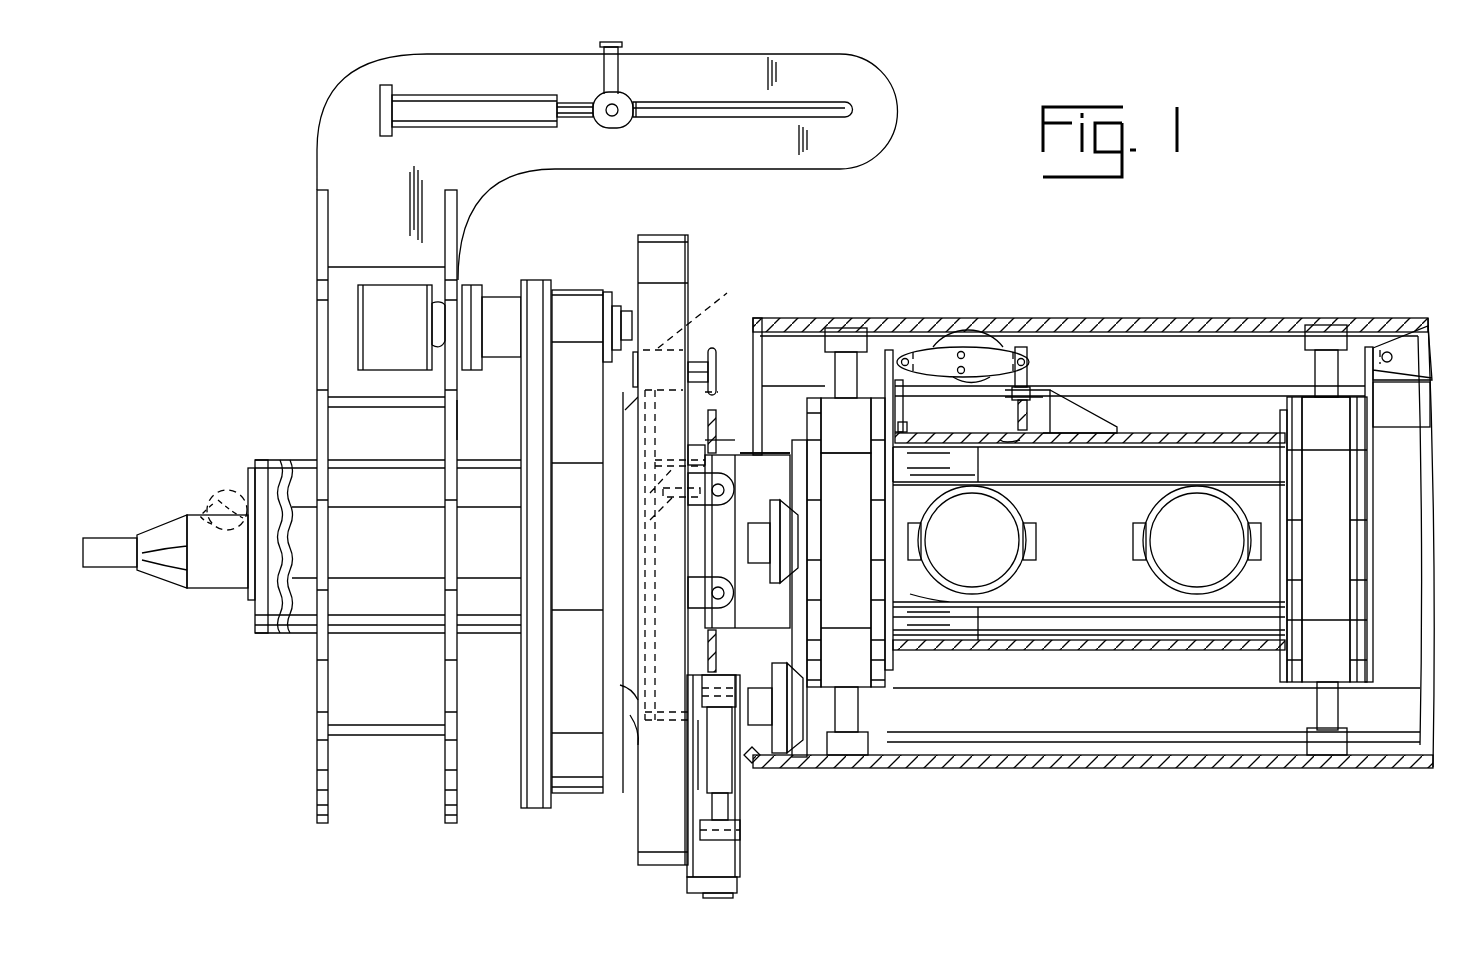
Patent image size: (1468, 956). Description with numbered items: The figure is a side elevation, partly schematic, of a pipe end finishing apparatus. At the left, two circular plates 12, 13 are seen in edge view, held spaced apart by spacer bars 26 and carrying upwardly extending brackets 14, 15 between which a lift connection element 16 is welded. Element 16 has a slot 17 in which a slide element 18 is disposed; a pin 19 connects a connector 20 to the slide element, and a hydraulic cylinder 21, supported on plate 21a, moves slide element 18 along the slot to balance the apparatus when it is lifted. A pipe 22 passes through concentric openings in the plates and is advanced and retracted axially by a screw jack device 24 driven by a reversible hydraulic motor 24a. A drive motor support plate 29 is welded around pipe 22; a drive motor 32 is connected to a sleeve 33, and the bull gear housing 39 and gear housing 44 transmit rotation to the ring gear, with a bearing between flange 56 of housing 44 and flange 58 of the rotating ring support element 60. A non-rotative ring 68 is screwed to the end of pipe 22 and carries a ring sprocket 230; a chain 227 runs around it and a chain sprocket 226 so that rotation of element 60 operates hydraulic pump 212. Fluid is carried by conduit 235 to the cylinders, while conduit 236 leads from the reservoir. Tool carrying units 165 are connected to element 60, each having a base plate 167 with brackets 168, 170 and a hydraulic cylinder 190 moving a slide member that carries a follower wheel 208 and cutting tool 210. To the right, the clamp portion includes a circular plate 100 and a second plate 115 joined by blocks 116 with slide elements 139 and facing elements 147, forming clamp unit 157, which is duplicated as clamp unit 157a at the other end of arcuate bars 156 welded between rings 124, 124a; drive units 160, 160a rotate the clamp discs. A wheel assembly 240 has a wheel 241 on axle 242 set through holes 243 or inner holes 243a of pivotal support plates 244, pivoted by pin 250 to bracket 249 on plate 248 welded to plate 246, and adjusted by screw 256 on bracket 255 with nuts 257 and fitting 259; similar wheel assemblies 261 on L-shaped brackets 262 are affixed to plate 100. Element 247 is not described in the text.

The circular plate 12 is at (392, 494).
The circular plate 13 is at (458, 417).
The brackets 14 is at (317, 220).
The brackets 15 is at (458, 208).
The lift connection element 16 is at (850, 168).
The slot 17 is at (745, 115).
The slide element 18 is at (635, 103).
The pin 19 is at (612, 118).
The connector 20 is at (620, 45).
The hydraulic cylinder 21 is at (490, 127).
The plate 21a is at (380, 95).
The pipe 22 is at (294, 460).
The screw jack device 24 is at (207, 592).
The reversible hydraulic motor 24a is at (208, 490).
The spacer bars 26 is at (413, 408).
The drive motor support plate 29 is at (538, 280).
The drive motor 32 is at (358, 322).
The sleeve 33 is at (440, 360).
The bull gear housing 39 is at (485, 287).
The gear housing 44 is at (580, 290).
The flange 56 is at (625, 690).
The flange 58 is at (632, 725).
The rotating ring support element 60 is at (655, 235).
The ring 68 is at (717, 420).
The circular plate 100 is at (1368, 656).
The second circular plate 115 is at (878, 690).
The blocks 116 is at (803, 398).
The ring 124 is at (982, 650).
The ring 124a is at (1282, 422).
The slide element 139 is at (848, 328).
The facing elements 147 is at (892, 350).
The bars 156 is at (1155, 433).
The left hand clamp unit 157 is at (793, 335).
The clamp unit 157a is at (1298, 392).
The drive unit 160 is at (1024, 512).
The drive unit 160a is at (1142, 552).
The tool carrying unit 165 is at (745, 585).
The base plate 167 is at (690, 643).
The bracket 168 is at (715, 577).
The bracket 170 is at (735, 482).
The hydraulic cylinder 190 is at (707, 778).
The follower wheel 208 is at (810, 527).
The cutting tool 210 is at (752, 765).
The hydraulic pump 212 is at (706, 315).
The chain sprocket 226 is at (714, 358).
The chain 227 is at (728, 391).
The ring sprocket 230 is at (716, 440).
The conduit 235 is at (660, 492).
The conduit 236 is at (648, 520).
The wheel assembly 240 is at (1047, 362).
The wheel 241 is at (1020, 350).
The axle 242 is at (965, 348).
The holes 243 is at (980, 357).
The second shaft holes 243a is at (984, 372).
The pivotal support plates 244 is at (1000, 337).
The plate 246 is at (903, 414).
The plate 247 is at (907, 430).
The plate 248 is at (839, 542).
The bracket 249 is at (968, 330).
The pin 250 is at (910, 362).
The bracket 255 is at (1072, 408).
The screw 256 is at (1020, 440).
The nuts 257 is at (1005, 393).
The internally threaded fitting 259 is at (1030, 378).
The wheel assemblies 261 is at (1418, 305).
The L-shaped brackets 262 is at (1400, 430).